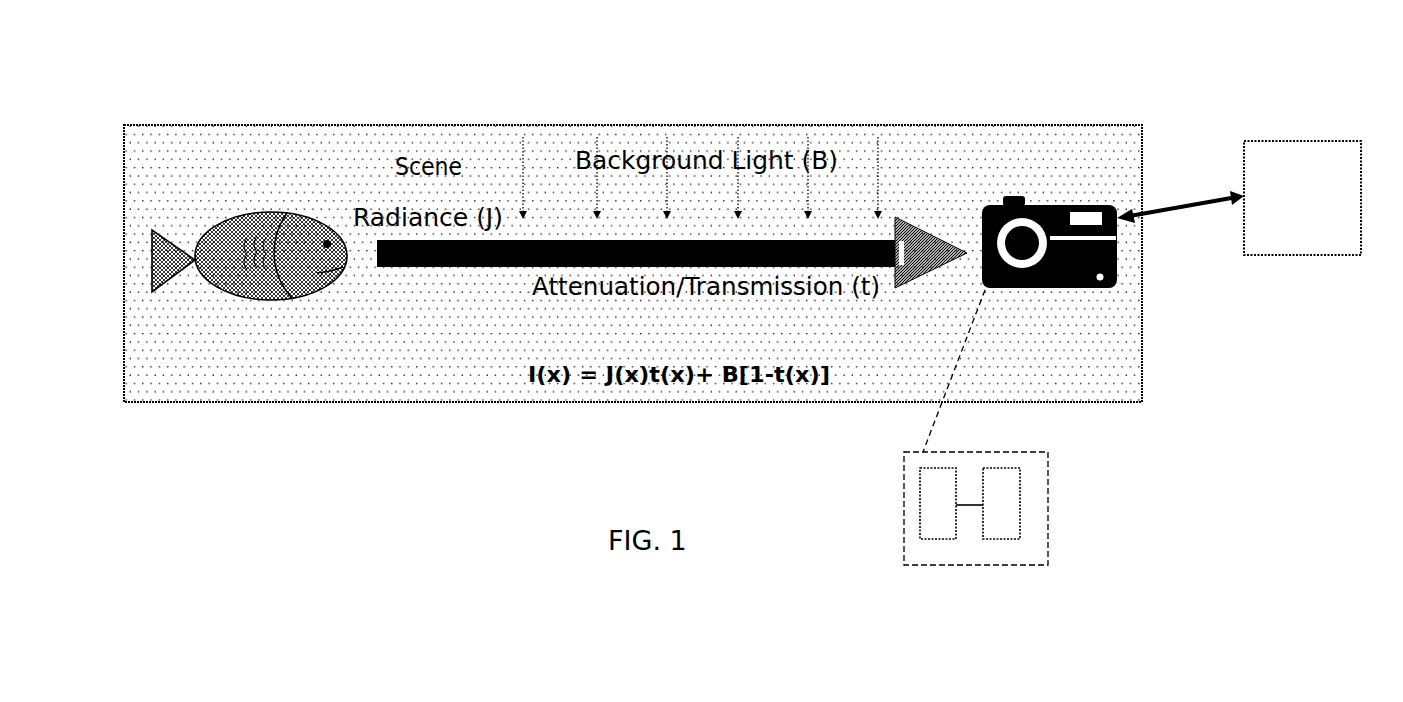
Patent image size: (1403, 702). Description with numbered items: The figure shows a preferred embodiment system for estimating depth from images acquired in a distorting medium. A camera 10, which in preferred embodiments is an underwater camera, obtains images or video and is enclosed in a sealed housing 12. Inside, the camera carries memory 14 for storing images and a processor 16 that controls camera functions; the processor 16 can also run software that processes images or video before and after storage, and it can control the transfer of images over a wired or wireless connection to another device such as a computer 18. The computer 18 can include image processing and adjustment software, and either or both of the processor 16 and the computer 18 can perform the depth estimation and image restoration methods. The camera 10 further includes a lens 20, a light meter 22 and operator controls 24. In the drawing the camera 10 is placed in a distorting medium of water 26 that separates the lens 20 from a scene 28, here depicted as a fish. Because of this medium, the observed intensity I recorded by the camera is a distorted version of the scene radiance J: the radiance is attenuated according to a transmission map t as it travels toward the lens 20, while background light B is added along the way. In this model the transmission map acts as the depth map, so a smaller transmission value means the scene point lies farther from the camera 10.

The camera 10 is at (1107, 307).
The sealed housing 12 is at (1071, 212).
The memory 14 is at (1021, 485).
The processor 16 is at (920, 507).
The computer 18 is at (1302, 255).
The lens 20 is at (1000, 243).
The light meter 22 is at (1102, 281).
The operator controls 24 is at (1016, 197).
The water 26 is at (463, 350).
The scene 28 is at (283, 200).